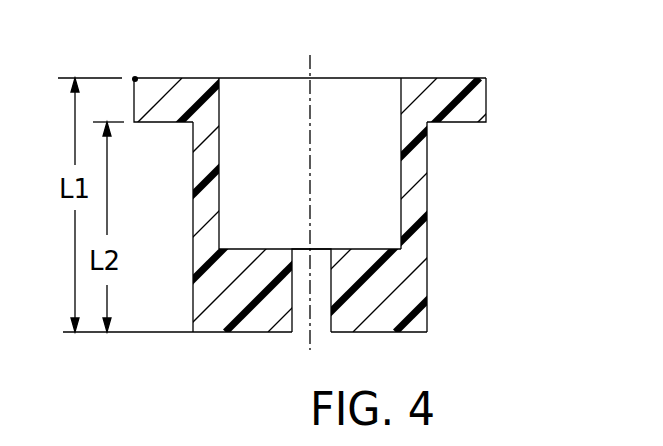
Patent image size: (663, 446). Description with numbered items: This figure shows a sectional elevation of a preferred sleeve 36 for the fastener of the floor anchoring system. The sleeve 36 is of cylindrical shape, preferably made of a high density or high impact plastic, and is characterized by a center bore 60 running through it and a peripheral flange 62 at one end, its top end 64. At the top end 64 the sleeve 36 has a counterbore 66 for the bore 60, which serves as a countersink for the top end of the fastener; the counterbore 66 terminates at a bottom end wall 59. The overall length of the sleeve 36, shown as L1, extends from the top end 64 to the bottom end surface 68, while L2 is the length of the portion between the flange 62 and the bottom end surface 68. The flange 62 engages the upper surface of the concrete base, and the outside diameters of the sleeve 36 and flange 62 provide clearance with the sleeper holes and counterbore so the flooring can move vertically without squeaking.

The sleeve 36 is at (427, 197).
The bottom end wall of the countersink 59 is at (365, 249).
The center bore 60 is at (326, 283).
The peripheral flange 62 is at (465, 123).
The top end 64 is at (445, 78).
The counterbore 66 is at (220, 115).
The bottom end surface 68 is at (412, 334).